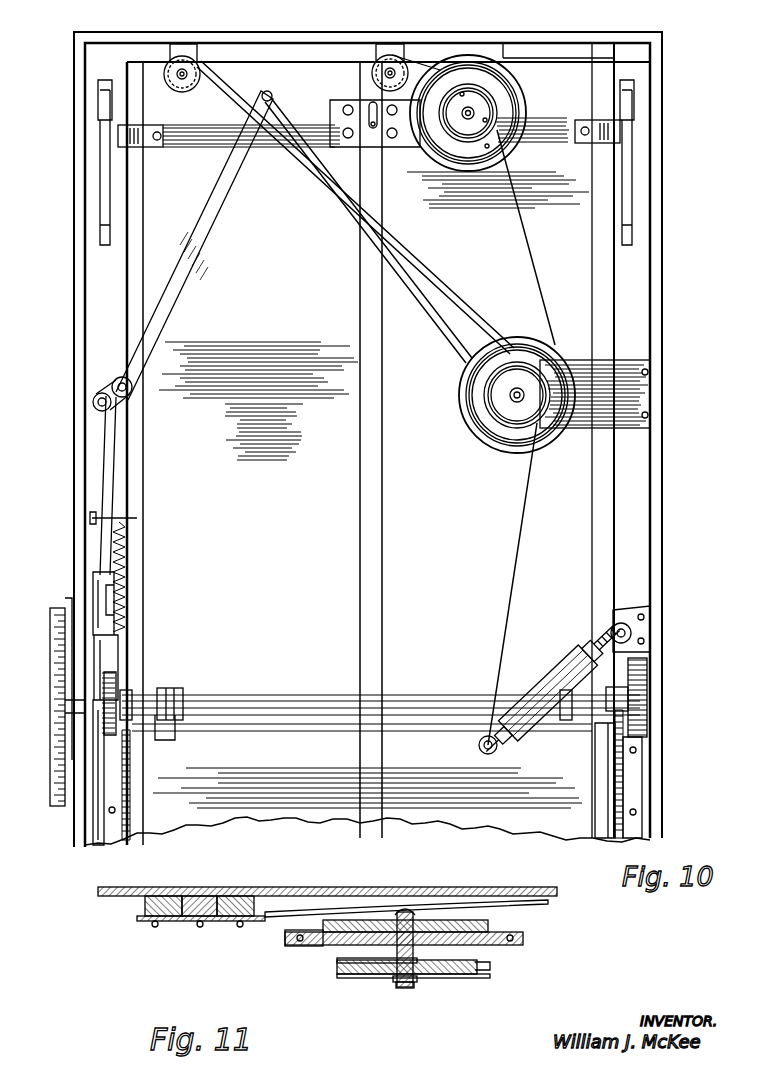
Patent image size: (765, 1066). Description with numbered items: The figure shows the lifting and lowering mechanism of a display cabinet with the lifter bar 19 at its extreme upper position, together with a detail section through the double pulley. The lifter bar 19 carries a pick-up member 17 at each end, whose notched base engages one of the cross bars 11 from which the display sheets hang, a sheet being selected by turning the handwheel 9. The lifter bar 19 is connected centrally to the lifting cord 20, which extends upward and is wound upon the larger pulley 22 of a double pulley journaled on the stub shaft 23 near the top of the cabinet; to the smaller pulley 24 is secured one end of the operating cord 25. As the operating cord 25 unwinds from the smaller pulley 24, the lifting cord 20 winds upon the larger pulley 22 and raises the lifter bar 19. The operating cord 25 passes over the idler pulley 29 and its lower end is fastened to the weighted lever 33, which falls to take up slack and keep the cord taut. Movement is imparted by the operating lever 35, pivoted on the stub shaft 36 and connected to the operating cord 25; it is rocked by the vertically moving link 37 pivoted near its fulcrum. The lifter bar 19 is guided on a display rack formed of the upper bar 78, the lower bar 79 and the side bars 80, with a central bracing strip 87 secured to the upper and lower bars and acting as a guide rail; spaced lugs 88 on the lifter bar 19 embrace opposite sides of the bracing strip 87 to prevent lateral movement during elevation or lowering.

In FIG. 10, the handwheel 9 is at (50, 712).
In FIG. 10, the cross bars 11 is at (314, 112).
In FIG. 10, the pick-up member 17 is at (152, 148).
In FIG. 10, the lifter bar 19 is at (206, 148).
In FIG. 11, the lifter bar 19 is at (263, 920).
In FIG. 11, the lifting cord 20 is at (300, 950).
In FIG. 10, the larger pulley 22 is at (512, 80).
In FIG. 11, the larger pulley 22 is at (523, 938).
In FIG. 11, the stub shaft 23 is at (395, 988).
In FIG. 11, the smaller pulley 24 is at (345, 978).
In FIG. 10, the operating cord 25 is at (462, 290).
In FIG. 11, the operating cord 25 is at (490, 975).
In FIG. 10, the idler pulley 29 is at (178, 92).
In FIG. 10, the weighted lever 33 is at (558, 668).
In FIG. 10, the operating lever 35 is at (190, 262).
In FIG. 10, the stub shaft 36 is at (92, 405).
In FIG. 10, the link 37 is at (118, 450).
In FIG. 10, the upper bar 78 is at (560, 48).
In FIG. 10, the lower bar 79 is at (430, 712).
In FIG. 10, the side bars 80 is at (127, 268).
In FIG. 10, the bracing strip 87 is at (382, 585).
In FIG. 11, the bracing strip 87 is at (232, 887).
In FIG. 11, the lugs 88 is at (150, 925).